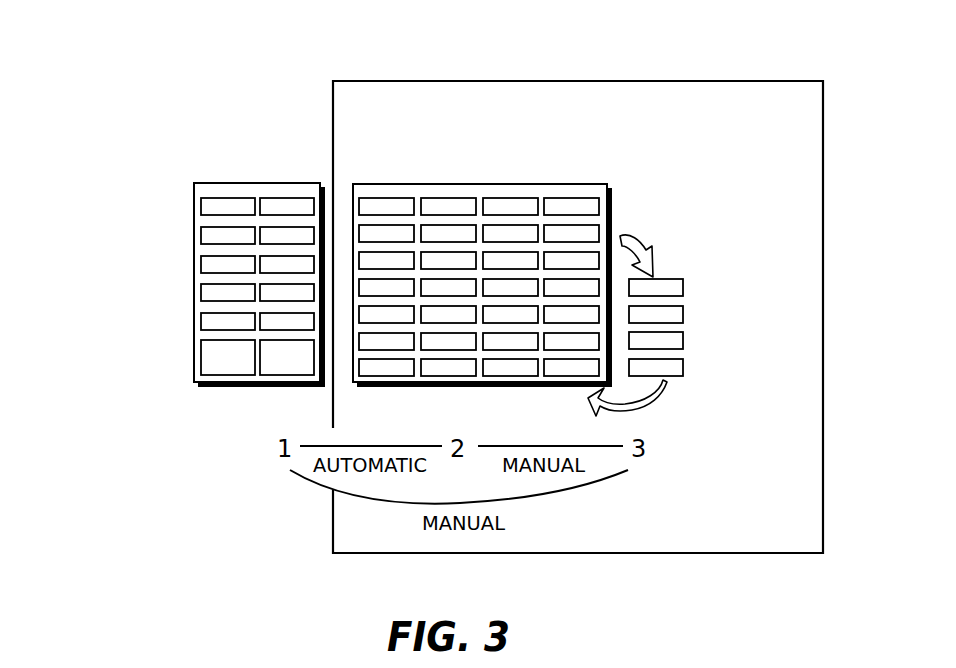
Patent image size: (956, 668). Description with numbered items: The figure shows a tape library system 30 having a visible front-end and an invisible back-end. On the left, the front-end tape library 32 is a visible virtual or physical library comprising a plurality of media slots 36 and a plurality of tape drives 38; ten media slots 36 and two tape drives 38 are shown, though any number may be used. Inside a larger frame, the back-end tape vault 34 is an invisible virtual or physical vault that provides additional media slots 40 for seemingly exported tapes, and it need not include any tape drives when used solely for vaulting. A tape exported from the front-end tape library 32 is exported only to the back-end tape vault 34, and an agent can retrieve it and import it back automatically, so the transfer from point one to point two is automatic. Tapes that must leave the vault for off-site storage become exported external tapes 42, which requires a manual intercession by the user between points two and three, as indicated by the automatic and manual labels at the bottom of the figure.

The tape library system 30 is at (134, 23).
The front-end tape library 32 is at (211, 222).
The back-end tape vault 34 is at (490, 72).
The media slots 36 is at (203, 202).
The tape drives 38 is at (210, 362).
The additional media slots 40 is at (596, 203).
The external tapes 42 is at (680, 328).